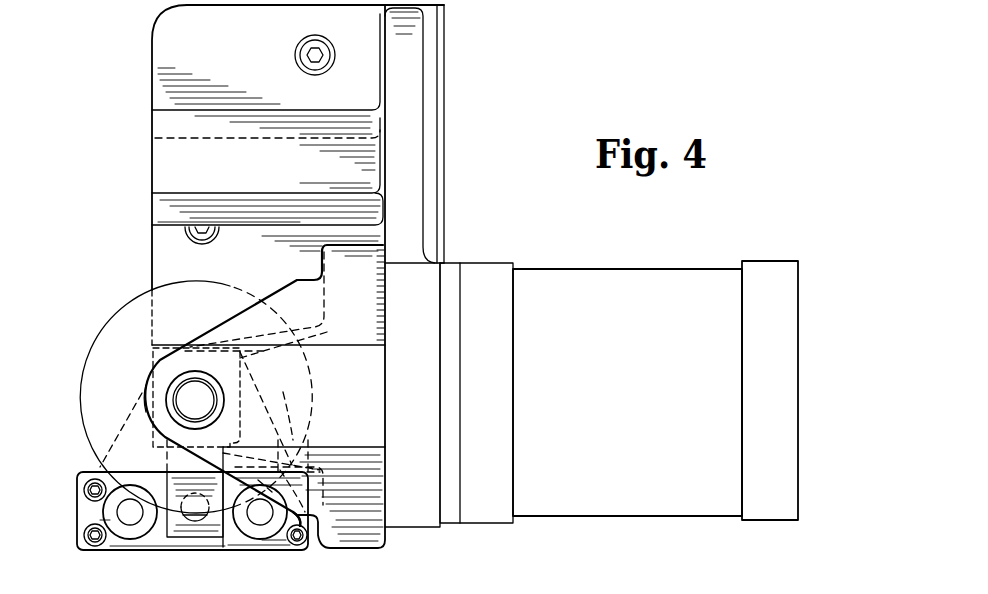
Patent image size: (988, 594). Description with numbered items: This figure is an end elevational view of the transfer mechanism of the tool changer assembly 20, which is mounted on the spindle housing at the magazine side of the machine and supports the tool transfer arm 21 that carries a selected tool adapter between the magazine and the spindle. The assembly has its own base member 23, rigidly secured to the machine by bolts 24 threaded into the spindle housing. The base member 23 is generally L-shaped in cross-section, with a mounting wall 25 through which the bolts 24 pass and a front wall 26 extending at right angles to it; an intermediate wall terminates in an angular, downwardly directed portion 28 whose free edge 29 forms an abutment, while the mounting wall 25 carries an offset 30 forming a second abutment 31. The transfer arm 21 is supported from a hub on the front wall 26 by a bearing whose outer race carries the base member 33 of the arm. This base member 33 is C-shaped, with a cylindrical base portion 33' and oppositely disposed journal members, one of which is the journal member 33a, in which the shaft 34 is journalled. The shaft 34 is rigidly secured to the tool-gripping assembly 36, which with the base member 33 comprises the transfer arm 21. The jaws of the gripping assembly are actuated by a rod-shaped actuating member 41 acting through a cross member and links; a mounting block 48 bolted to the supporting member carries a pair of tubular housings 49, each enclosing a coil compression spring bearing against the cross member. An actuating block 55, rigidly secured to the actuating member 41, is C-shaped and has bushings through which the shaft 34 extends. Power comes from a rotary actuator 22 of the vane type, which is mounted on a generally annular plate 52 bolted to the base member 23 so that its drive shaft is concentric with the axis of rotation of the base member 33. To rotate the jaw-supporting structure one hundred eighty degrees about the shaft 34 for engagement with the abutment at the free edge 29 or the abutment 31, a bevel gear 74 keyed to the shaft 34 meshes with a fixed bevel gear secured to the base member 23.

The tool changer assembly 20 is at (461, 247).
The tool transfer arm 21 is at (142, 287).
The actuator 22 is at (655, 278).
The base member 23 is at (445, 49).
The bolts 24 is at (305, 52).
The mounting wall 25 is at (160, 68).
The front wall 26 is at (412, 118).
The downwardly directed portion 28 is at (160, 165).
The free edge 29 is at (160, 215).
The offset 30 is at (306, 390).
The abutment 31 is at (320, 330).
The base member of the transfer arm 33 is at (264, 385).
The journal member 33a is at (158, 402).
The base portion 33' is at (370, 543).
The shaft 34 is at (186, 393).
The tool-gripping assembly 36 is at (80, 479).
The actuating member 41 is at (212, 546).
The mounting block 48 is at (280, 548).
The tubular housings 49 is at (118, 538).
The annular plate 52 is at (455, 285).
The actuating block 55 is at (176, 540).
The bevel gear 74 is at (95, 360).